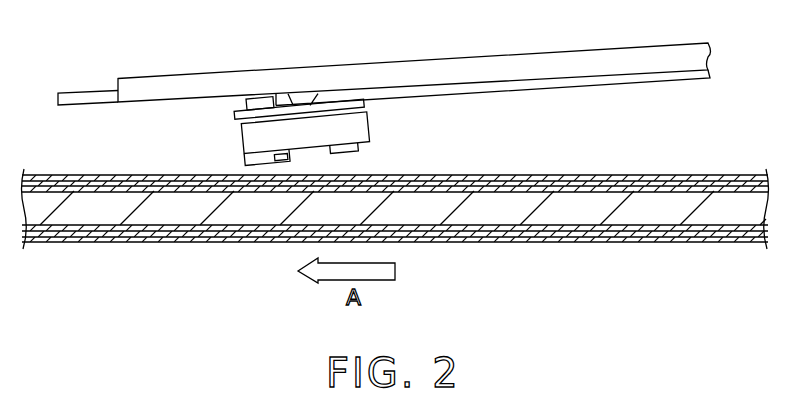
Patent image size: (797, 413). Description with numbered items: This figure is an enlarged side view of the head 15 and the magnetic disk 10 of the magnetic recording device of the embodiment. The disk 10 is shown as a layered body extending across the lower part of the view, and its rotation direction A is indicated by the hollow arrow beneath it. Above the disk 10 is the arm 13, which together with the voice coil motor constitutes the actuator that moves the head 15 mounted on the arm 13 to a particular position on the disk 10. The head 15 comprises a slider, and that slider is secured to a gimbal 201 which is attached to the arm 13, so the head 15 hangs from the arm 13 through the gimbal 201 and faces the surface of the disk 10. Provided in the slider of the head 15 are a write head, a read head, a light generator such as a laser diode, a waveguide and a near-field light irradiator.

The magnetic disk 10 is at (733, 162).
The arm 13 is at (586, 59).
The head 15 is at (326, 94).
The gimbal 201 is at (380, 88).